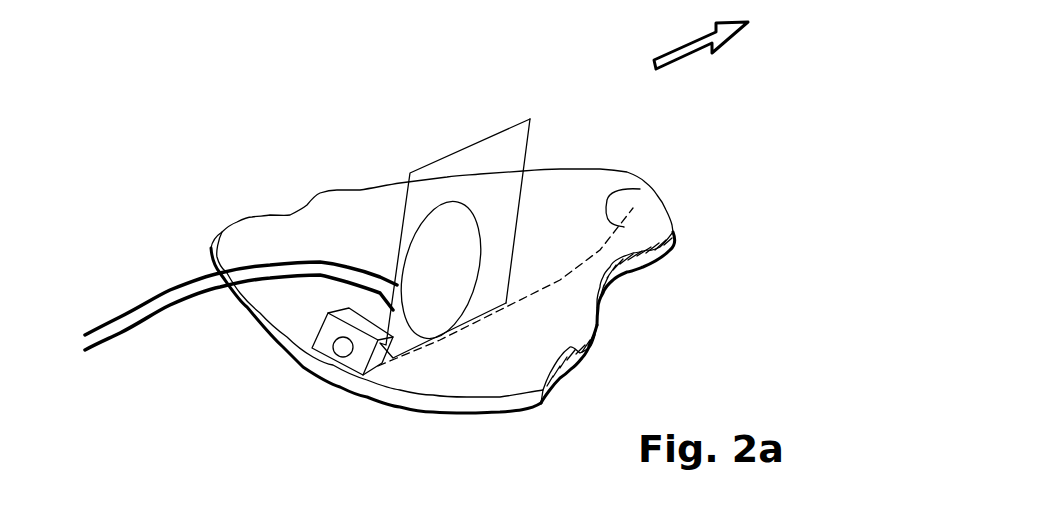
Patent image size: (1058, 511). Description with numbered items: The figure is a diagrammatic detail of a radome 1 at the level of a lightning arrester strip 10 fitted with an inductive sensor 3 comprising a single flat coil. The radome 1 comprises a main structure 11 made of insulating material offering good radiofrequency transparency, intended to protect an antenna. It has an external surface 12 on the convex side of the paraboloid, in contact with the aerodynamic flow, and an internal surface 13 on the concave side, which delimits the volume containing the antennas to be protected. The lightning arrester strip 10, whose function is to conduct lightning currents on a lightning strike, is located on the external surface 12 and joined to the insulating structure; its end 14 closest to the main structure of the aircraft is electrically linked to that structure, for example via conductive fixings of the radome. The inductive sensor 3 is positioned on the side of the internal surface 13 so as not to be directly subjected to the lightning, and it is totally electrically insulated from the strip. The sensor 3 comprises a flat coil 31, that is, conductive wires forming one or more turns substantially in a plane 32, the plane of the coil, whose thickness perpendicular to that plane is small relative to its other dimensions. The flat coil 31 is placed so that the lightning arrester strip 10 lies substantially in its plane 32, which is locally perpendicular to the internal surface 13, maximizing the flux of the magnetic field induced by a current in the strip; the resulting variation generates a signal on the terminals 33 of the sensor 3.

The radome 1 is at (516, 420).
The inductive sensor 3 is at (482, 208).
The lightning arrester strip 10 is at (640, 189).
The main structure 11 is at (650, 263).
The external surface 12 is at (578, 365).
The internal surface 13 is at (263, 230).
The end of lightning arrester strip 14 is at (340, 347).
The flat coil 31 is at (422, 228).
The plane of the coil 32 is at (528, 149).
The terminals of the sensor 33 is at (84, 318).